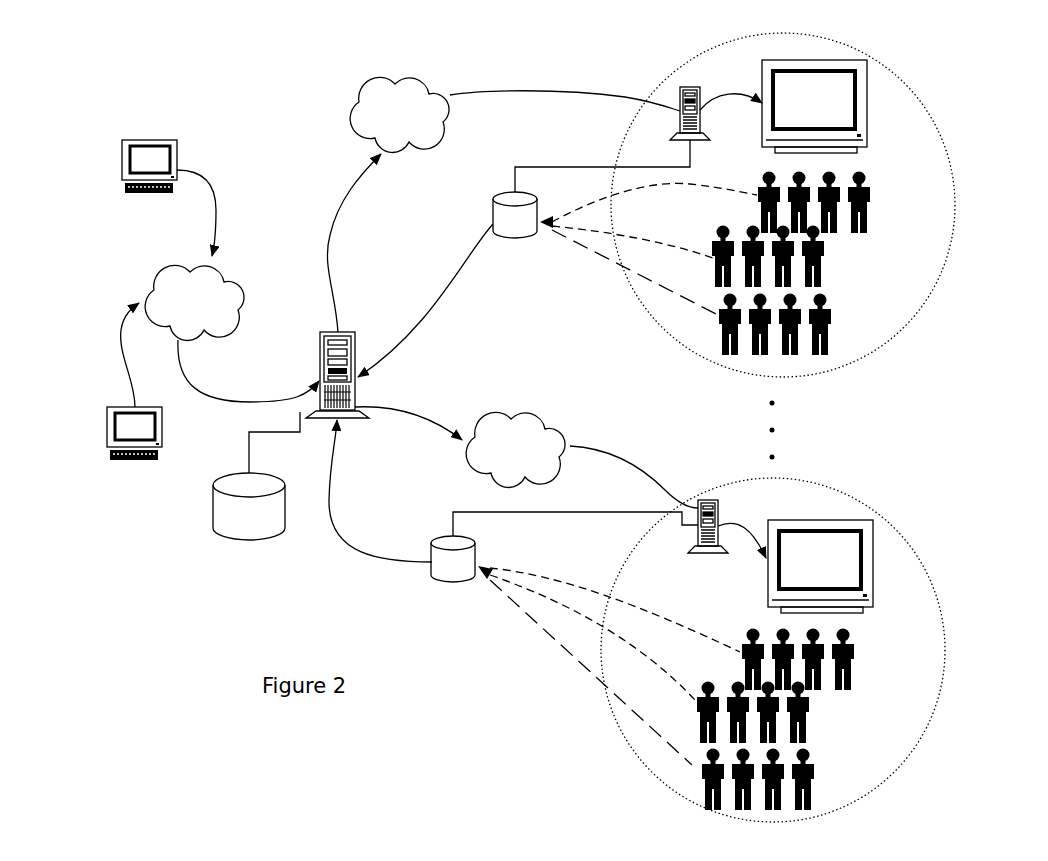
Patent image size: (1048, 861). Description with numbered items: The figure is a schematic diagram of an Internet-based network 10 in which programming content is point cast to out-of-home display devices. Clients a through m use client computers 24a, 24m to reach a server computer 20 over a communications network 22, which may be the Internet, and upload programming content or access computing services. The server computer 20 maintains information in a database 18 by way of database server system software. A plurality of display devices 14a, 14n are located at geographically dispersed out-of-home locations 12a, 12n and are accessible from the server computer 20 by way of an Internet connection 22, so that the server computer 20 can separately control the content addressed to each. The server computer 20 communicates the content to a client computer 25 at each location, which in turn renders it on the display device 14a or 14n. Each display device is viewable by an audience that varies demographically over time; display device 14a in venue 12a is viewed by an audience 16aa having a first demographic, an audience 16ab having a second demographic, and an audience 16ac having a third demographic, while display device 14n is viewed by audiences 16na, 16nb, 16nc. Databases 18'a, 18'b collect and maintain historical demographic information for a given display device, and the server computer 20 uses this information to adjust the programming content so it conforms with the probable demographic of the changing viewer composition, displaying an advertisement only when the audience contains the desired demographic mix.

The interactive system 10 is at (172, 619).
The out-of-home location 12a is at (664, 159).
The out-of-home location 12n is at (708, 581).
The display device 14a is at (867, 88).
The display device 14n is at (873, 548).
The audience 16aa is at (875, 198).
The audience 16ab is at (827, 252).
The audience 16ac is at (833, 325).
The audience 16na is at (858, 663).
The audience 16nb is at (813, 718).
The audience 16nc is at (817, 767).
The database 18 is at (229, 506).
The database 18'a is at (523, 238).
The database 18'b is at (433, 577).
The server computer 20 is at (320, 360).
The communications network 22 is at (248, 298).
The client computer 24a is at (148, 140).
The client computer 24m is at (107, 433).
The client computer 25 is at (688, 87).